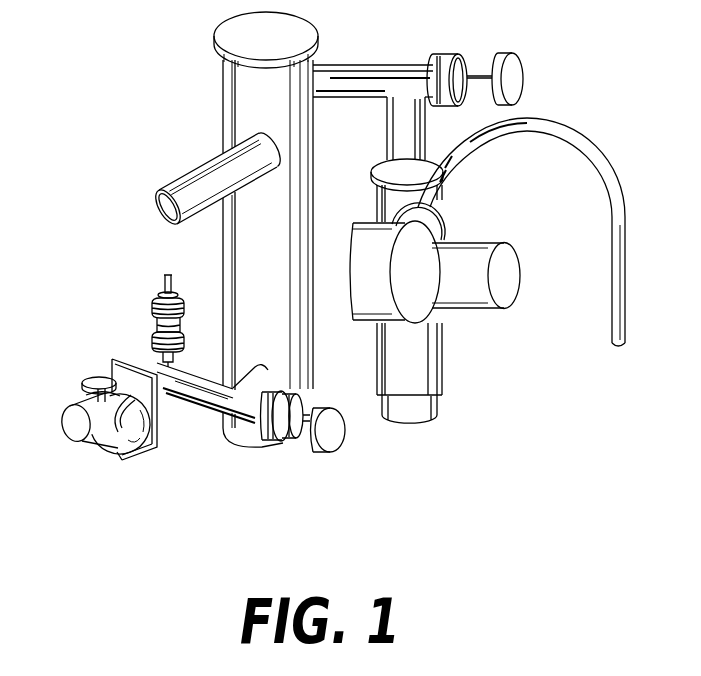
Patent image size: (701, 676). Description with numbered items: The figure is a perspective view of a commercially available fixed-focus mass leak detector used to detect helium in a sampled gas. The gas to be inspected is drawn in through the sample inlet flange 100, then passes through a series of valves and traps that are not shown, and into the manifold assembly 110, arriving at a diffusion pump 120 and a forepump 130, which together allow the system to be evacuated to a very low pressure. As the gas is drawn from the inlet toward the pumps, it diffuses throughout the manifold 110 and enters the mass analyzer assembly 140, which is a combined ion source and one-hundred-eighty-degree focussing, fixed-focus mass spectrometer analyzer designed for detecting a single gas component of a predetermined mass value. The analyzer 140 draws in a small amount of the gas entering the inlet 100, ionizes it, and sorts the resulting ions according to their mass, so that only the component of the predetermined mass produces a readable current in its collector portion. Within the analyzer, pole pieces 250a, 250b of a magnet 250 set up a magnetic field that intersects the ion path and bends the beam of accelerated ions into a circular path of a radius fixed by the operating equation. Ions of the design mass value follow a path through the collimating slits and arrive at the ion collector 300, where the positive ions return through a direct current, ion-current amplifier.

The sample inlet flange 100 is at (156, 217).
The manifold assembly 110 is at (276, 104).
The diffusion pump 120 is at (421, 366).
The forepump 130 is at (468, 279).
The mass analyzer assembly 140 is at (97, 362).
The magnet 250 is at (101, 409).
The pole piece 250a is at (115, 427).
The pole piece 250b is at (80, 393).
The ion collector 300 is at (91, 379).